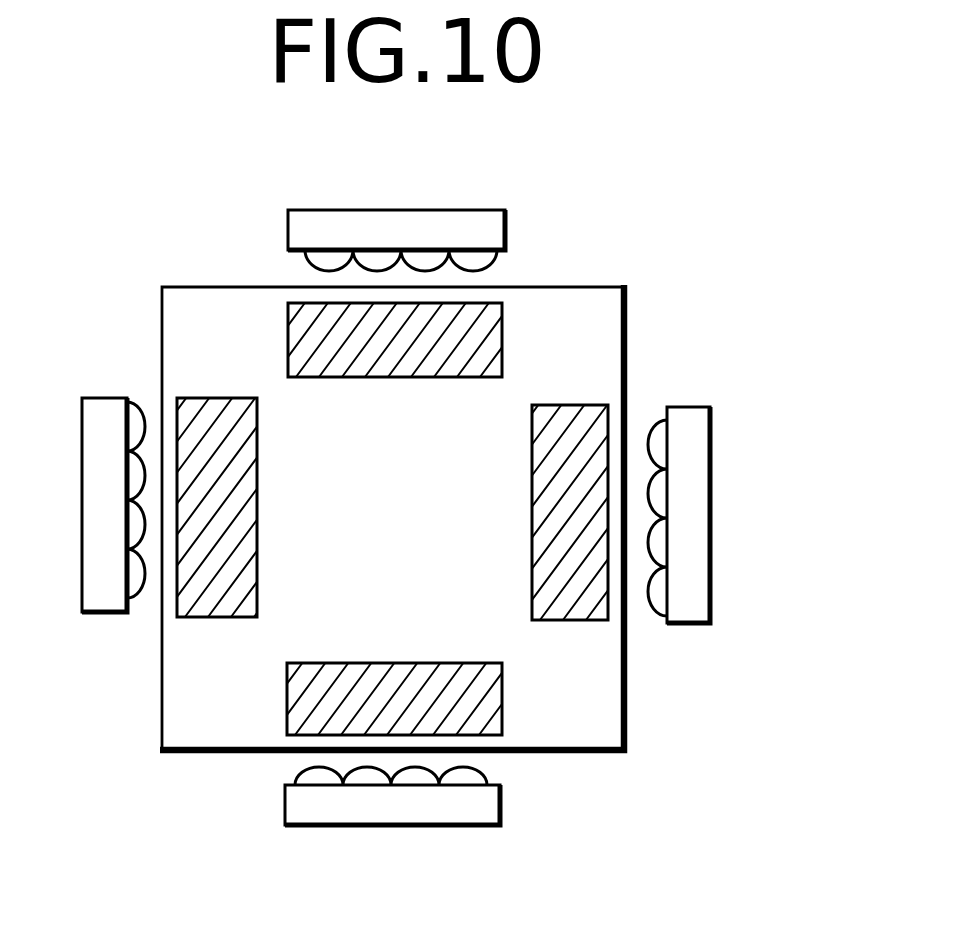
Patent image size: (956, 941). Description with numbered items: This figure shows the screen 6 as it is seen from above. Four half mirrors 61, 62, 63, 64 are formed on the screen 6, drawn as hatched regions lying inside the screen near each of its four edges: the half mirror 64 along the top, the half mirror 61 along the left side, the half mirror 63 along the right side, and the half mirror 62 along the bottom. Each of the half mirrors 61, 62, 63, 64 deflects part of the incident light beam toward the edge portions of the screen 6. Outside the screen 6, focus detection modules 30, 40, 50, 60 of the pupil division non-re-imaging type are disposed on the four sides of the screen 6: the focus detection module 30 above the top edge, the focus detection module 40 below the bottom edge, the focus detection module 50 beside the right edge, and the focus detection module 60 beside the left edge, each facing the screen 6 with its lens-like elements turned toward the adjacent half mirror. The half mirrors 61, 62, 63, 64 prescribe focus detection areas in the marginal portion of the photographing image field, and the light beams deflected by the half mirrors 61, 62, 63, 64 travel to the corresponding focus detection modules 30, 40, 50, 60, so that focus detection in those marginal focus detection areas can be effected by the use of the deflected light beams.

The screen 6 is at (612, 317).
The focus detection module 30 is at (506, 226).
The focus detection module 40 is at (285, 807).
The focus detection module 50 is at (698, 602).
The focus detection module 60 is at (105, 403).
The half mirror 61 is at (197, 617).
The half mirror 62 is at (496, 713).
The half mirror 63 is at (602, 406).
The half mirror 64 is at (289, 320).